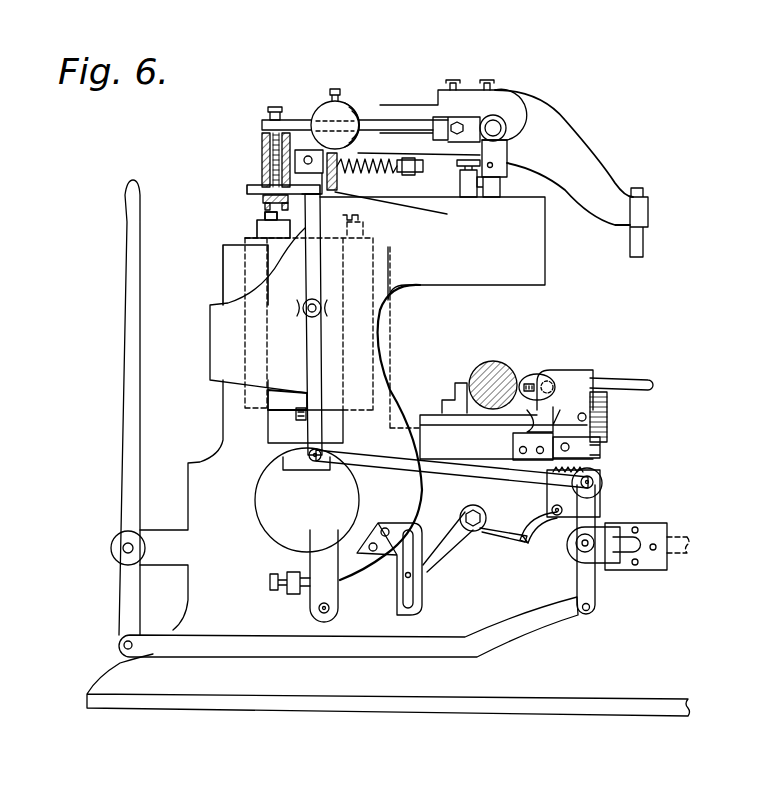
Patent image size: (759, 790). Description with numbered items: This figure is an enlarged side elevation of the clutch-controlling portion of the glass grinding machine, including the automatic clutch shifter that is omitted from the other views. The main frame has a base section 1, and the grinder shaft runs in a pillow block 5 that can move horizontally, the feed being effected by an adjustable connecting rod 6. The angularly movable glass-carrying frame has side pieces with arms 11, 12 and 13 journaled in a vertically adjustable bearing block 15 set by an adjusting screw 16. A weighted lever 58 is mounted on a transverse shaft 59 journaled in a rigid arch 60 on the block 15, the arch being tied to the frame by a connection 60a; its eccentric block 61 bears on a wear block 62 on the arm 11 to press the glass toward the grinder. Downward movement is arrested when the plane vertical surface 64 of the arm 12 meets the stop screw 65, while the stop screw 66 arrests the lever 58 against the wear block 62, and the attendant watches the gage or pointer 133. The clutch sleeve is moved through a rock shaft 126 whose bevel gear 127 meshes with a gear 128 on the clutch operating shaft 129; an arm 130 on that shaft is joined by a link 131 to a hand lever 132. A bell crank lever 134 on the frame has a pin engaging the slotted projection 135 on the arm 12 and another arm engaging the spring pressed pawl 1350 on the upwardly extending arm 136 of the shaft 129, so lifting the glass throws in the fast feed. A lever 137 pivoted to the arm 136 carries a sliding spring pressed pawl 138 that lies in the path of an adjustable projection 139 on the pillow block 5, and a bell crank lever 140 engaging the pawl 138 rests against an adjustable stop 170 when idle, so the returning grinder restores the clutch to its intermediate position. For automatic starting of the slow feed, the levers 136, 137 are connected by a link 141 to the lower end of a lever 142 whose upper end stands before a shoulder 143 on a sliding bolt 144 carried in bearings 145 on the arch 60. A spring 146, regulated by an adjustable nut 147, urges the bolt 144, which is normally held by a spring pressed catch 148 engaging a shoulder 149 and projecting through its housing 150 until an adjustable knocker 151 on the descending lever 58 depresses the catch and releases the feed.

The base section 1 is at (163, 685).
The pillow block 5 is at (452, 400).
The connecting rod 6 is at (647, 380).
The arm 11 is at (520, 273).
The arm 12 is at (403, 495).
The arm 13 is at (212, 313).
The bearing block 15 is at (280, 397).
The adjusting screw 16 is at (300, 415).
The weighted lever 58 is at (305, 113).
The transverse shaft 59 is at (500, 128).
The arch 60 is at (390, 110).
The connection 60a is at (645, 237).
The eccentric block 61 is at (502, 157).
The wear block 62 is at (500, 182).
The plane vertical surface 64 is at (308, 597).
The stop screw 65 is at (270, 580).
The stop screw 66 is at (480, 187).
The rock shaft 126 is at (687, 562).
The bevel gear 127 is at (607, 568).
The gear 128 is at (562, 560).
The clutch operating shaft 129 is at (578, 543).
The arm 130 is at (595, 587).
The link 131 is at (387, 650).
The hand lever 132 is at (123, 475).
The gage or pointer 133 is at (263, 120).
The bell crank lever 134 is at (453, 540).
The slotted projection 135 is at (418, 598).
The spring pressed pawl 1350 is at (537, 513).
The upwardly extending arm 136 is at (593, 503).
The lever 137 is at (593, 462).
The sliding spring pressed pawl 138 is at (597, 388).
The adjustable projection 139 is at (572, 378).
The bell crank lever 140 is at (598, 452).
The link 141 is at (430, 463).
The lever 142 is at (313, 343).
The shoulder 143 is at (300, 205).
The sliding bolt 144 is at (408, 215).
The bearing 145 is at (263, 198).
The spring 146 is at (393, 157).
The adjustable nut 147 is at (417, 162).
The spring pressed catch 148 is at (277, 203).
The shoulder 149 is at (253, 187).
The housing 150 is at (262, 143).
The knocker 151 is at (263, 132).
The adjustable stop 170 is at (557, 430).